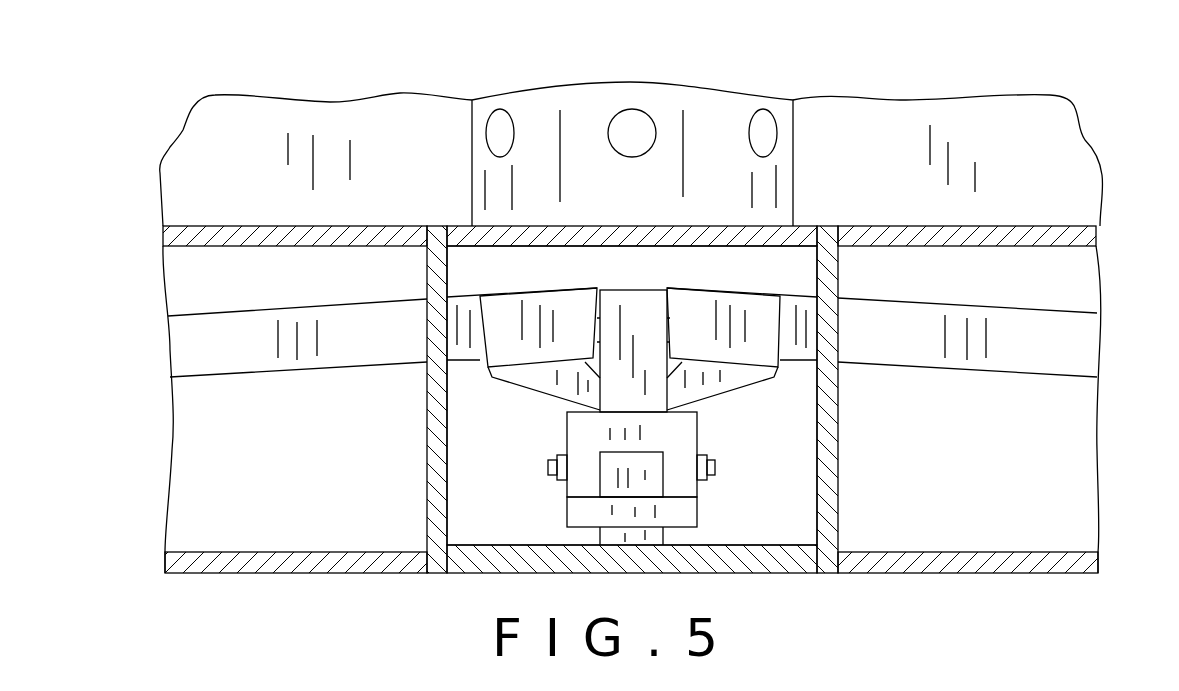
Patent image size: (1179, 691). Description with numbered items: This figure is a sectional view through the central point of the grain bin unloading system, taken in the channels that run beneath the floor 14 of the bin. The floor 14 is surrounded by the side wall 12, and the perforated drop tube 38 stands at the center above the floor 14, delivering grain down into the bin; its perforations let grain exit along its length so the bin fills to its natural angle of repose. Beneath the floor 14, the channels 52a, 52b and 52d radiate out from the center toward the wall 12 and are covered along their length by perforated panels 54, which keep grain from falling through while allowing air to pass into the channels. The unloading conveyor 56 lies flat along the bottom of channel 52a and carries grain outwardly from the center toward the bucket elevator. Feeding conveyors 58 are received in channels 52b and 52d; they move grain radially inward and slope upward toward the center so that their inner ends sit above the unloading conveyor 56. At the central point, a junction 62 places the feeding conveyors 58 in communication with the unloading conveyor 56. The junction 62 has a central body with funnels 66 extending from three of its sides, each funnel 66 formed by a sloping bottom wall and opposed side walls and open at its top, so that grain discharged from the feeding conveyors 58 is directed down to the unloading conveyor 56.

The side wall 12 is at (335, 118).
The floor 14 is at (945, 223).
The drop tube 38 is at (793, 133).
The perforated panels 54 is at (820, 224).
The unloading conveyor 56 is at (700, 430).
The feeding conveyors 58 is at (220, 310).
The junction 62 is at (726, 399).
The funnels 66 is at (530, 392).
The channel 52a is at (753, 527).
The channel 52b is at (983, 523).
The channel 52d is at (320, 537).